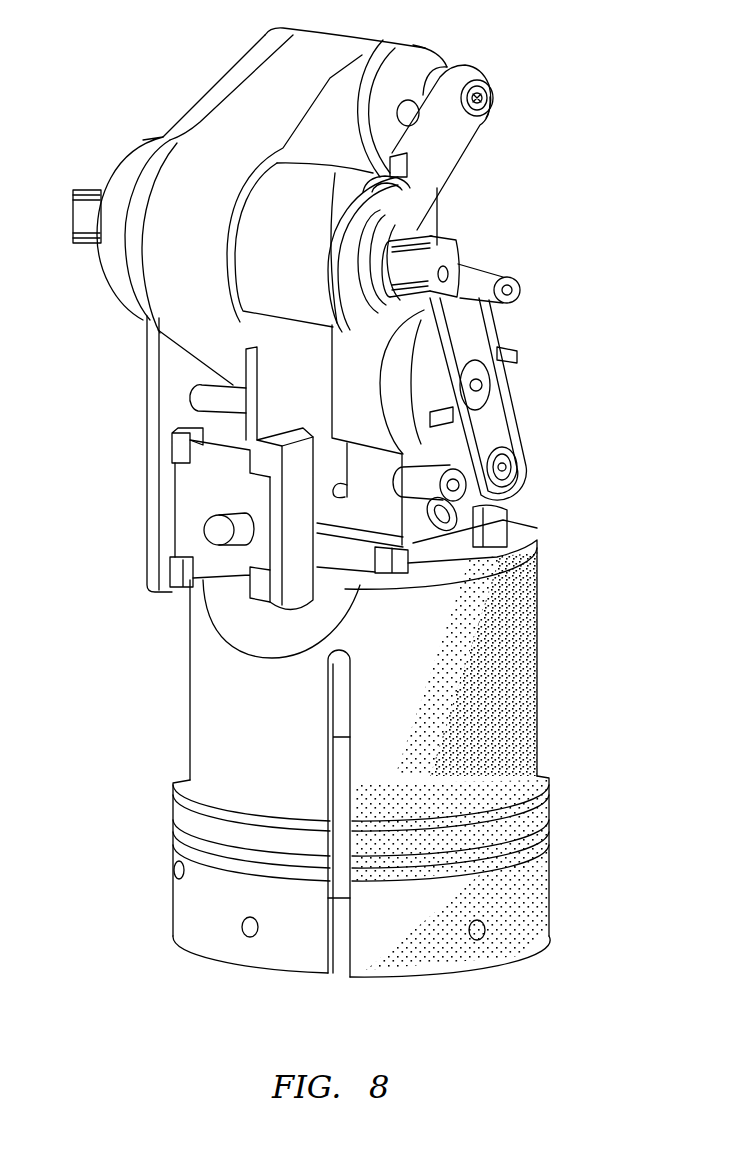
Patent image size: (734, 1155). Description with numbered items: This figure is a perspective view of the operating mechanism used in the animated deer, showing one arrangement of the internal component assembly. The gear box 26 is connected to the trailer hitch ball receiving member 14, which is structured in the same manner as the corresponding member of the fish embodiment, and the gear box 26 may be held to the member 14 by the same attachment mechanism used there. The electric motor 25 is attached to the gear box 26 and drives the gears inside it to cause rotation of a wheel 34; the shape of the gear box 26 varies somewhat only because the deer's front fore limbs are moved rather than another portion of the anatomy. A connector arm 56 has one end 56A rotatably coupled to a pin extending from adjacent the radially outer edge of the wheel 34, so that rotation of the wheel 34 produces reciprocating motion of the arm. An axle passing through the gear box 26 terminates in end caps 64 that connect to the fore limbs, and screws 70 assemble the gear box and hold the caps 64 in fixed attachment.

The trailer hitch ball receiving member 14 is at (274, 737).
The electric motor 25 is at (371, 381).
The gear box 26 is at (267, 127).
The wheel 34 is at (427, 52).
The connector arm 56 is at (450, 137).
The end 56A is at (485, 117).
The end cap 64 is at (407, 262).
The screw 70 is at (485, 90).